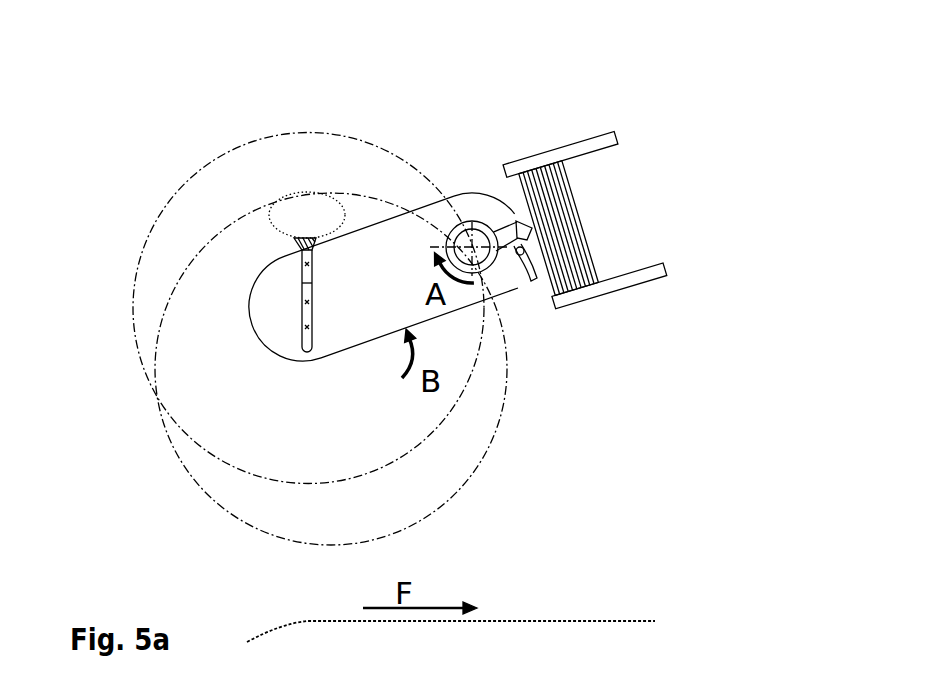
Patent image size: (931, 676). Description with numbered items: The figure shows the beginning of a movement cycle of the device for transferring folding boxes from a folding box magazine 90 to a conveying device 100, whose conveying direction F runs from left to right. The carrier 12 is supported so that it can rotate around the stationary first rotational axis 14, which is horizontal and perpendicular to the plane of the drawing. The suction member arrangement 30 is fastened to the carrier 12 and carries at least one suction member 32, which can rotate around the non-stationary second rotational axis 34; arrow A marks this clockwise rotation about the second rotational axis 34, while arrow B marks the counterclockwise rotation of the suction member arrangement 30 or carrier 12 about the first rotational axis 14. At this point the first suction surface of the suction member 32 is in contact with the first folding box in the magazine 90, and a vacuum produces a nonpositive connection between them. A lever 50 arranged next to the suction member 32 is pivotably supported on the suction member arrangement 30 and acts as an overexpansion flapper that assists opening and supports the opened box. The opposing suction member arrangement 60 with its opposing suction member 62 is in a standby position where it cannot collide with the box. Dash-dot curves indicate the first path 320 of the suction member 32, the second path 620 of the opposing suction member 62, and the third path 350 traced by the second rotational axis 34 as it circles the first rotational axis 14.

The carrier 12 is at (339, 328).
The stationary first rotational axis 14 is at (305, 308).
The suction member arrangement 30 is at (506, 282).
The suction member 32 is at (517, 222).
The second rotational axis 34 is at (470, 226).
The lever 50 is at (527, 277).
The opposing suction member arrangement 60 is at (179, 299).
The opposing suction member 62 is at (297, 240).
The folding box magazine 90 is at (585, 178).
The conveying device 100 is at (582, 620).
The first path 320 is at (356, 197).
The third path 350 is at (195, 170).
The second path 620 is at (272, 210).